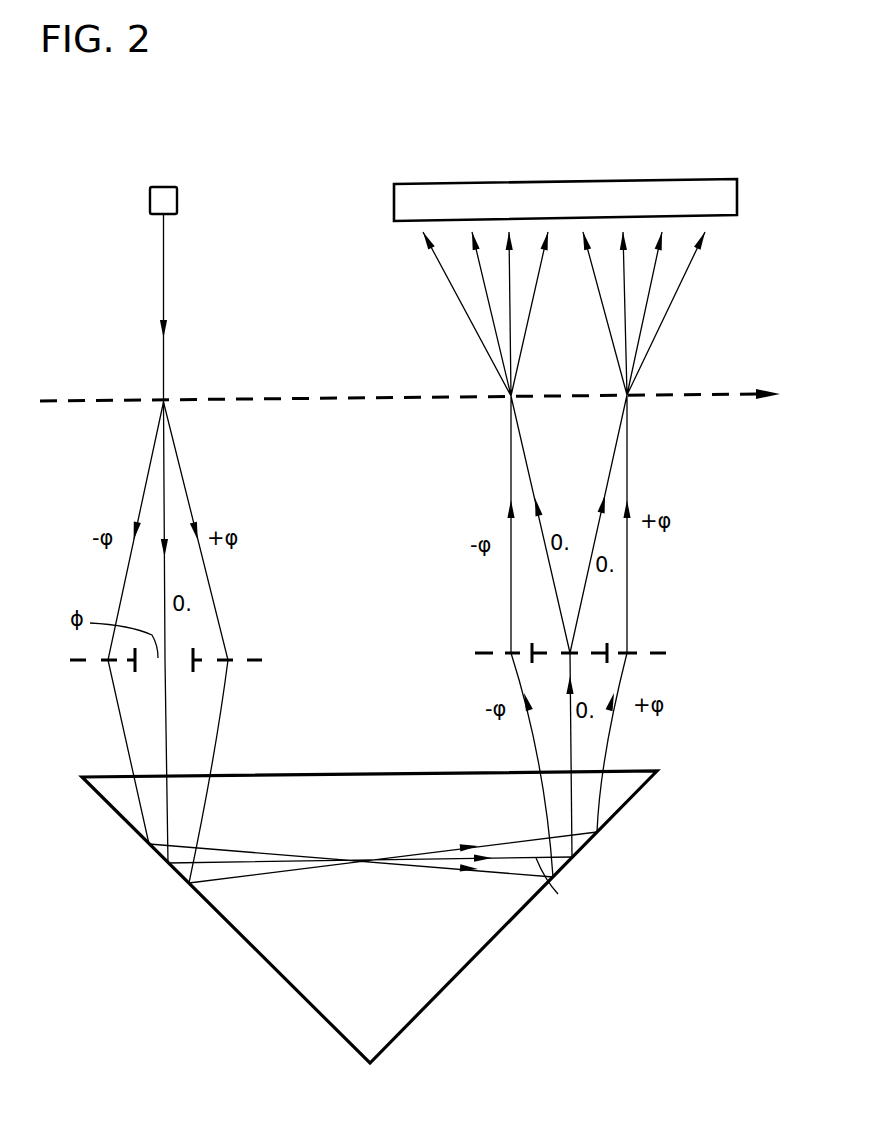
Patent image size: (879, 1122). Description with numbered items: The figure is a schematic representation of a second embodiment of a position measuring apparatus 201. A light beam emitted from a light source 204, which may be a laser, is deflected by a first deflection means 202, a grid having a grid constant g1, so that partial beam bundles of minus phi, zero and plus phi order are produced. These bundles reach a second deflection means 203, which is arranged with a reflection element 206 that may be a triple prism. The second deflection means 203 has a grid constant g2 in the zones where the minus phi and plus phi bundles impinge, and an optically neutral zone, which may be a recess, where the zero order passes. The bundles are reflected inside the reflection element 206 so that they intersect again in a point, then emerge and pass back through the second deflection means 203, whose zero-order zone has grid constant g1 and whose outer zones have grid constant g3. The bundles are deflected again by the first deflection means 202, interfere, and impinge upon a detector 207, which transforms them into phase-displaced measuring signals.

The position measuring apparatus 201 is at (398, 563).
The first deflection means 202 is at (83, 398).
The second deflection means 203 is at (83, 659).
The light source 204 is at (165, 198).
The reflection element 206 is at (395, 957).
The detector 207 is at (648, 197).